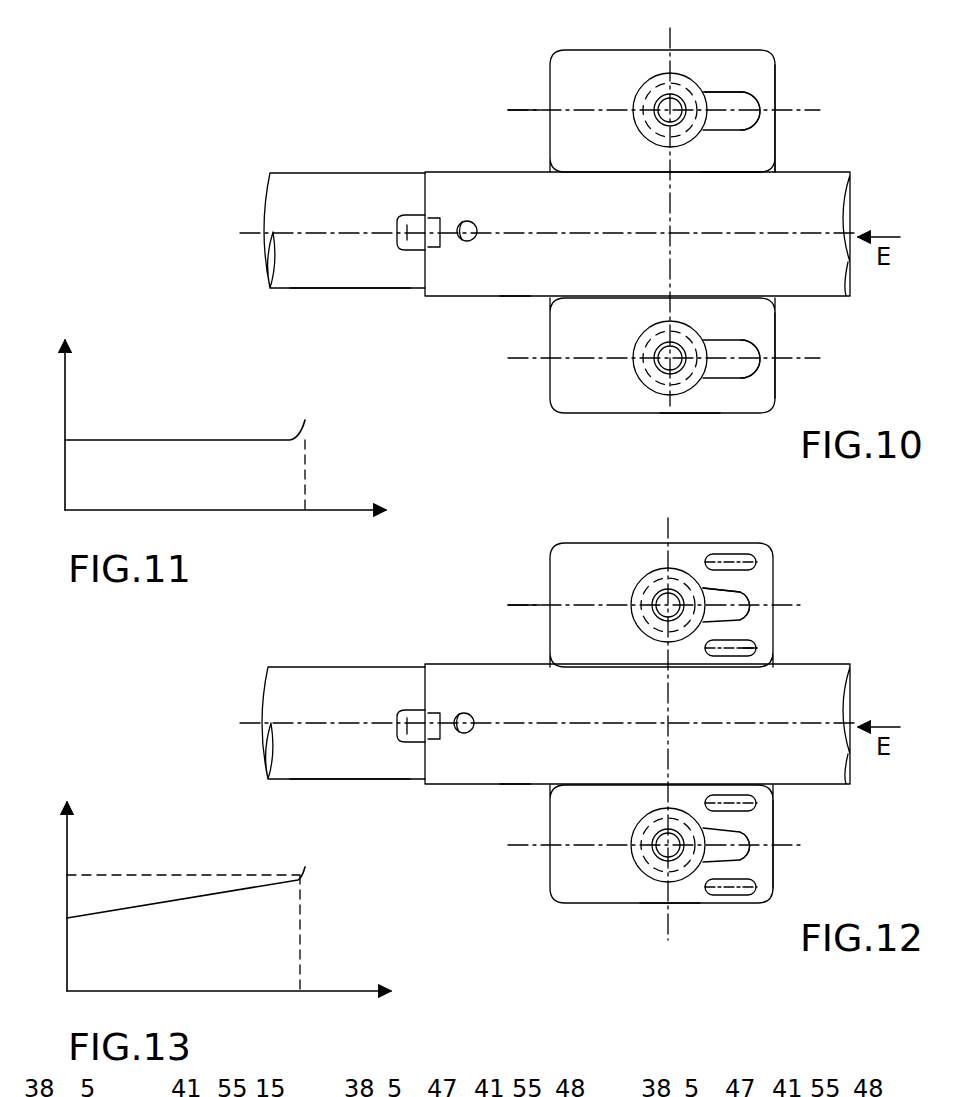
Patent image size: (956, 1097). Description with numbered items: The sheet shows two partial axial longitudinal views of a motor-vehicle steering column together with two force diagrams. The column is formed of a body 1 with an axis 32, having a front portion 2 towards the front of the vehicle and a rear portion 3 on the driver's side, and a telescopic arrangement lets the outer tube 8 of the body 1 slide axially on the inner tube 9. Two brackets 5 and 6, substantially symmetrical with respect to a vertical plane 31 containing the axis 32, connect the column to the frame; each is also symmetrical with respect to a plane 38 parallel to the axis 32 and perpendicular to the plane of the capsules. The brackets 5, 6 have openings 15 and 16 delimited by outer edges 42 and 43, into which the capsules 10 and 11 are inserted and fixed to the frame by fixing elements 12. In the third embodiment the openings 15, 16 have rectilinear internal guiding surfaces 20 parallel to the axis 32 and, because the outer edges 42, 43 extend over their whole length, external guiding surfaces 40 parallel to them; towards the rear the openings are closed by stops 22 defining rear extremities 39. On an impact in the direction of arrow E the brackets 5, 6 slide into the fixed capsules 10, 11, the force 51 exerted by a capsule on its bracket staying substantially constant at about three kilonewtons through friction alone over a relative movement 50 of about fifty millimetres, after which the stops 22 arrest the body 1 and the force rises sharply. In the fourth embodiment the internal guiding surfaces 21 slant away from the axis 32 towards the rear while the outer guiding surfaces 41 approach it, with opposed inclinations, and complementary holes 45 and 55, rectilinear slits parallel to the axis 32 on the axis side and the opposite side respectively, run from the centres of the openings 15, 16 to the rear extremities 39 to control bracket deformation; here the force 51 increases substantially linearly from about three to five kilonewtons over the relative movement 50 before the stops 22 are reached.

In FIG. 10, the body 1 is at (460, 170).
In FIG. 12, the body 1 is at (460, 662).
In FIG. 10, the front portion 2 is at (352, 170).
In FIG. 12, the front portion 2 is at (352, 662).
In FIG. 11, the rear portion 3 is at (172, 465).
In FIG. 13, the rear portion 3 is at (172, 900).
In FIG. 10, the bracket 5 is at (570, 142).
In FIG. 12, the bracket 5 is at (570, 632).
In FIG. 13, the bracket 5 is at (170, 926).
In FIG. 10, the bracket 6 is at (585, 400).
In FIG. 12, the bracket 6 is at (568, 898).
In FIG. 10, the outer tube 8 is at (460, 297).
In FIG. 12, the outer tube 8 is at (462, 785).
In FIG. 10, the inner tube 9 is at (350, 290).
In FIG. 12, the inner tube 9 is at (320, 780).
In FIG. 10, the capsule 10 is at (645, 95).
In FIG. 12, the capsule 10 is at (643, 590).
In FIG. 10, the capsule 11 is at (655, 395).
In FIG. 12, the capsule 11 is at (645, 870).
In FIG. 10, the fixing element 12 is at (666, 98).
In FIG. 12, the fixing element 12 is at (662, 594).
In FIG. 10, the opening 15 is at (740, 118).
In FIG. 10, the opening 16 is at (740, 366).
In FIG. 12, the opening 16 is at (735, 860).
In FIG. 10, the internal guiding surface 20 is at (730, 172).
In FIG. 12, the internal guiding surface 21 is at (740, 612).
In FIG. 10, the stop 22 is at (775, 72).
In FIG. 12, the stop 22 is at (758, 856).
In FIG. 10, the vertical plane 31 is at (365, 236).
In FIG. 12, the vertical plane 31 is at (360, 727).
In FIG. 10, the axis 32 is at (510, 236).
In FIG. 12, the axis 32 is at (512, 727).
In FIG. 10, the plane of symmetry 38 is at (527, 105).
In FIG. 12, the plane of symmetry 38 is at (527, 600).
In FIG. 10, the rear extremity 39 is at (776, 106).
In FIG. 12, the rear extremity 39 is at (775, 592).
In FIG. 10, the external guiding surface 40 is at (730, 92).
In FIG. 12, the outer guiding surface 41 is at (735, 590).
In FIG. 10, the outer edge 42 is at (688, 62).
In FIG. 12, the outer edge 42 is at (680, 558).
In FIG. 10, the outer edge 43 is at (690, 400).
In FIG. 12, the outer edge 43 is at (658, 892).
In FIG. 12, the complementary hole 45 is at (752, 652).
In FIG. 11, the relative movement 50 is at (360, 545).
In FIG. 13, the relative movement 50 is at (370, 1028).
In FIG. 11, the force 51 is at (65, 378).
In FIG. 13, the force 51 is at (67, 838).
In FIG. 12, the complementary hole 55 is at (728, 560).